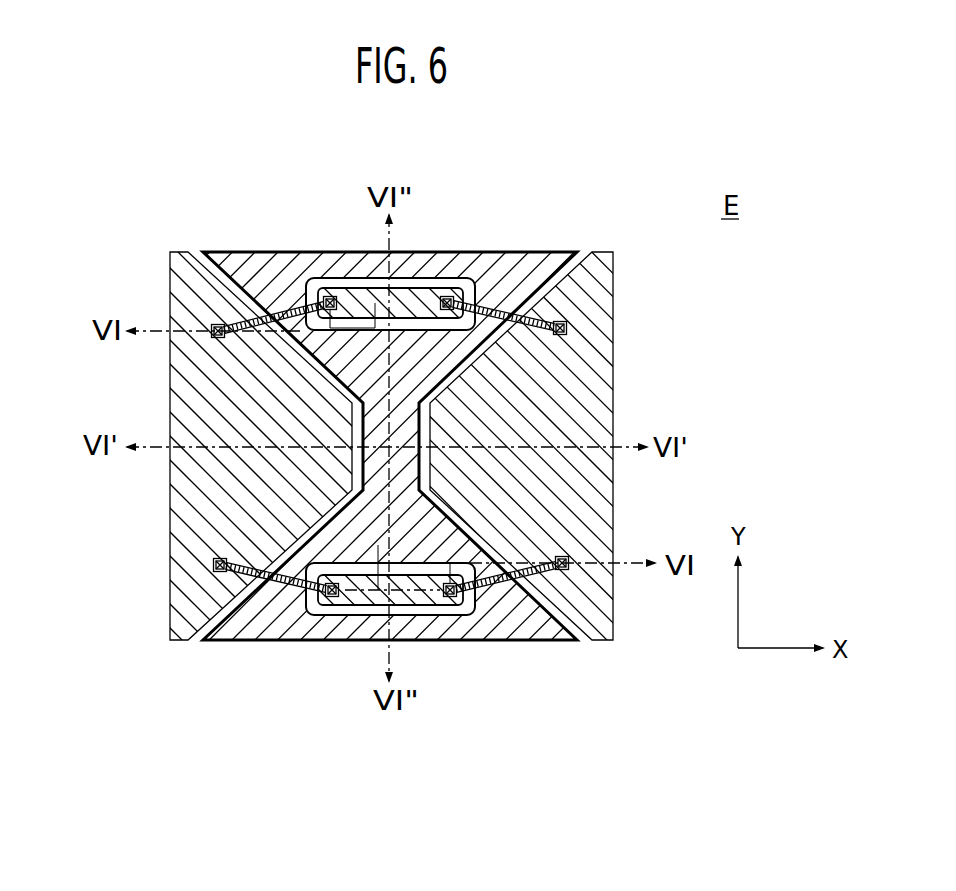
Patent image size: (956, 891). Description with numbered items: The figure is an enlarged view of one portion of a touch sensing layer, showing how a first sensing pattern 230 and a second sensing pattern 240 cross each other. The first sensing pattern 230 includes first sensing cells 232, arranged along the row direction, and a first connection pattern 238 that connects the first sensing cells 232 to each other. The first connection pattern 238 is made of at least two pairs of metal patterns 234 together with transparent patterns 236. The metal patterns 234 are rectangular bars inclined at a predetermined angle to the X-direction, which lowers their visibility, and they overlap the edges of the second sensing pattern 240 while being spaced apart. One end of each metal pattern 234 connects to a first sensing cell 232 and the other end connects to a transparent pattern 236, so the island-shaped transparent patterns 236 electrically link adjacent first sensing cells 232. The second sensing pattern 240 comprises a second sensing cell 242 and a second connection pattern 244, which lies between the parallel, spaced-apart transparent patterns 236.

The first sensing pattern 230 is at (478, 532).
The first sensing cell 232 is at (182, 622).
The metal pattern 234 is at (283, 578).
The transparent pattern 236 is at (360, 597).
The first connection pattern 238 is at (411, 512).
The second sensing pattern 240 is at (478, 450).
The second sensing cell 242 is at (467, 345).
The second connection pattern 244 is at (407, 425).